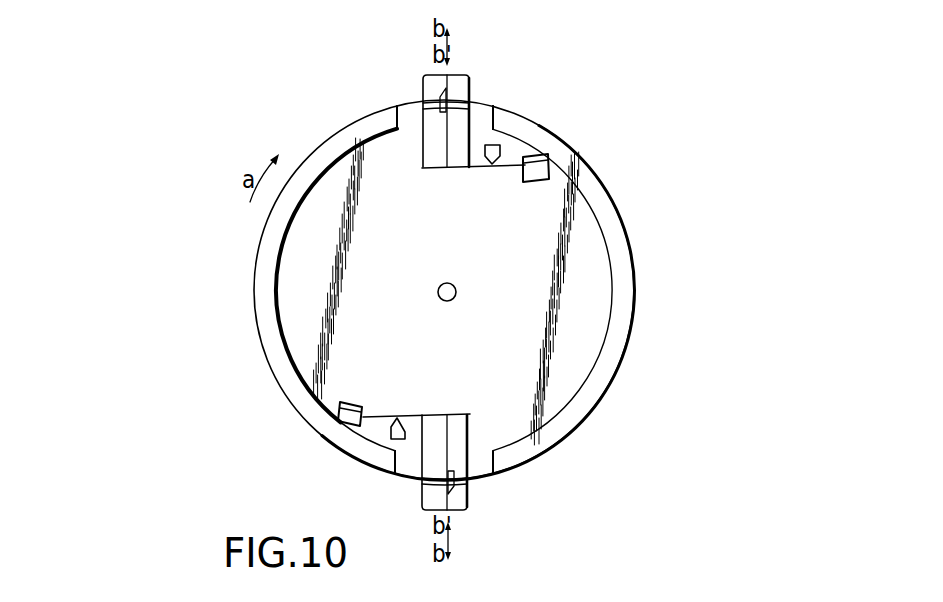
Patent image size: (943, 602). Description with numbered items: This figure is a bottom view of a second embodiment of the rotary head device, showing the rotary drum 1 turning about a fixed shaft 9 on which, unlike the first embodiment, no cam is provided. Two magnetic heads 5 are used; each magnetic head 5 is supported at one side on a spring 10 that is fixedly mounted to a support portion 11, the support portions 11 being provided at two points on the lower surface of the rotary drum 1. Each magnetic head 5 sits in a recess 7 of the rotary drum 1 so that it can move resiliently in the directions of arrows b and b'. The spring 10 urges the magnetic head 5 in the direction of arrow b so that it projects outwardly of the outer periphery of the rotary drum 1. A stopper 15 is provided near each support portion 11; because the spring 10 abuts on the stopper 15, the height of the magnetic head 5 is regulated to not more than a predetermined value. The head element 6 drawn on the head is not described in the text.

The rotary drum 1 is at (255, 289).
The magnetic head 5 is at (463, 98).
The head chip 6 is at (447, 90).
The recess 7 is at (482, 112).
The fixed shaft 9 is at (456, 293).
The spring 10 is at (524, 158).
The support portion 11 is at (538, 163).
The stopper 15 is at (495, 143).